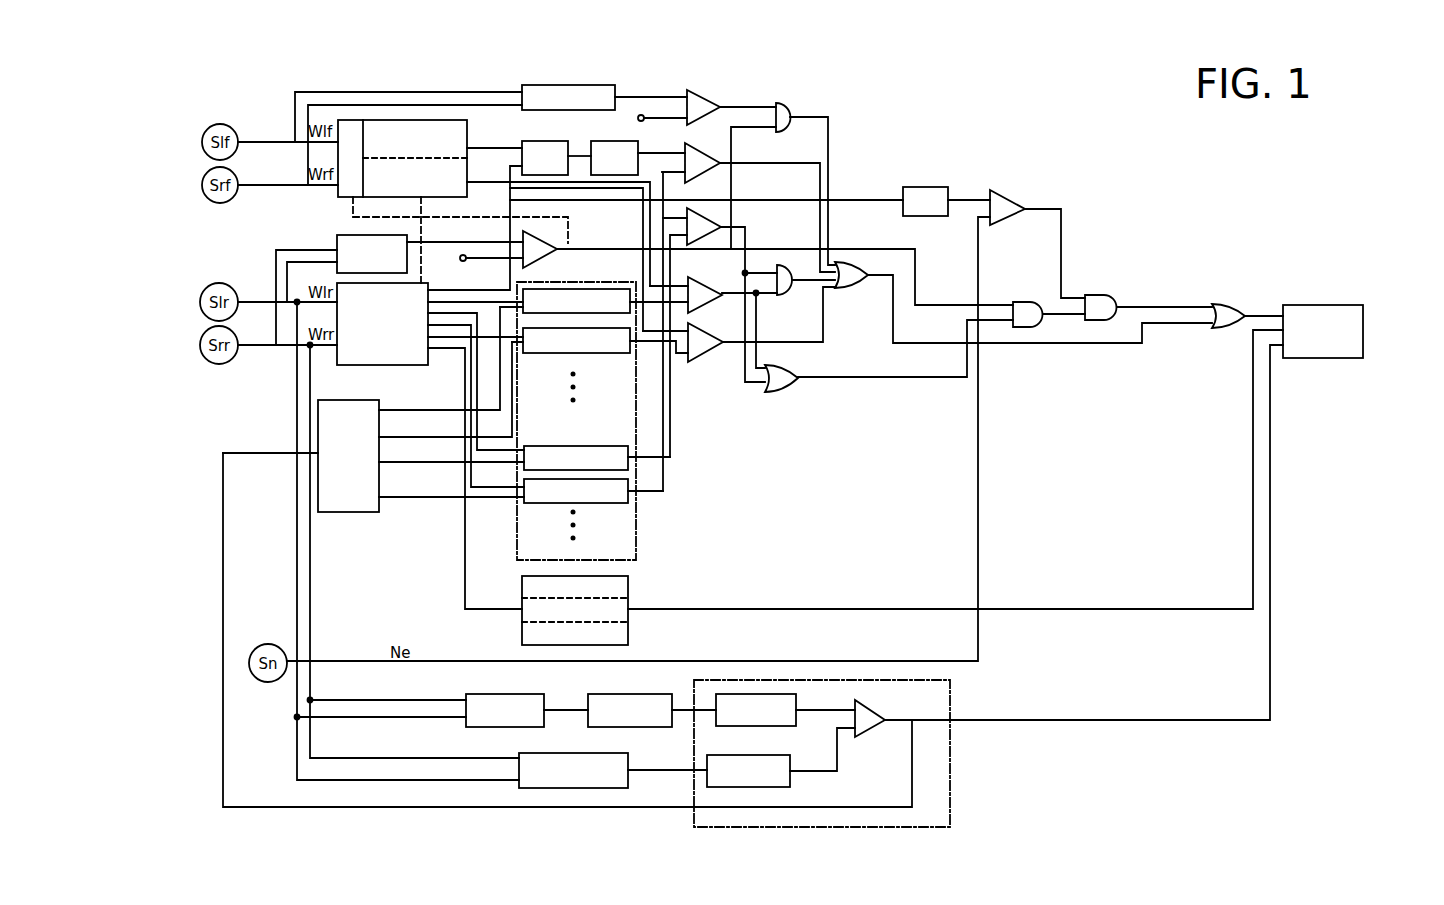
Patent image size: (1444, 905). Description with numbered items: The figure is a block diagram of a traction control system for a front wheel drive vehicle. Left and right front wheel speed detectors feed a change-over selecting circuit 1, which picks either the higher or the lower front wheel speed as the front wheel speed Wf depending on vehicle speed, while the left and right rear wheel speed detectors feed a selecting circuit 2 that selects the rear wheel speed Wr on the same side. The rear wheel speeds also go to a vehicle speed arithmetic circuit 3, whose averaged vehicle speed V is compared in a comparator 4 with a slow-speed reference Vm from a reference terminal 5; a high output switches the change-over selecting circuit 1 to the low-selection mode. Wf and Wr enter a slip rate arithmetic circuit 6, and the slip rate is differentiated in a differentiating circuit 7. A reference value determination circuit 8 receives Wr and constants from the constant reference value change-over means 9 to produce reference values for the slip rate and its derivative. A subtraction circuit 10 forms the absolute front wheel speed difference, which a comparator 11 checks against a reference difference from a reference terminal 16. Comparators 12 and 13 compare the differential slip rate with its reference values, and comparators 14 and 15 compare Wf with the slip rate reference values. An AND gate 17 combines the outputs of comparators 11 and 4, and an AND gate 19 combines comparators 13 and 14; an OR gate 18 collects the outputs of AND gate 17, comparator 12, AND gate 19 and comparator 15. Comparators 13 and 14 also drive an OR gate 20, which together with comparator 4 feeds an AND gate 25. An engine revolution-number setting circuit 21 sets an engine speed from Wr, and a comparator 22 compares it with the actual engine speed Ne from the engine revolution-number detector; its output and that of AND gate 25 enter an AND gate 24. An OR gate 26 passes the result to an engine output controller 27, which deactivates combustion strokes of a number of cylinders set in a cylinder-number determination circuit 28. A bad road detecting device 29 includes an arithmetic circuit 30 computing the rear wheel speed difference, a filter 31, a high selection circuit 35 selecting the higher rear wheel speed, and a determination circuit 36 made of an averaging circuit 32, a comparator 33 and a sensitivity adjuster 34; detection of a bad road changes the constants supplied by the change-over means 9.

The change-over selecting circuit 1 is at (471, 115).
The selecting circuit 2 is at (287, 366).
The vehicle speed arithmetic circuit 3 is at (250, 262).
The comparator 4 is at (768, 216).
The reference terminal 5 is at (460, 261).
The slip rate arithmetic circuit 6 is at (420, 64).
The differentiating circuit 7 is at (612, 147).
The reference value determination circuit 8 is at (637, 400).
The constant reference value change-over means 9 is at (280, 430).
The subtraction circuit 10 is at (532, 50).
The comparator 11 is at (703, 101).
The comparator 12 is at (697, 152).
The comparator 13 is at (702, 207).
The comparator 14 is at (699, 294).
The comparator 15 is at (702, 340).
The reference terminal 16 is at (640, 115).
The AND gate 17 is at (784, 105).
The OR gate 18 is at (860, 270).
The AND gate 19 is at (791, 297).
The OR gate 20 is at (792, 368).
The engine revolution-number setting circuit 21 is at (934, 190).
The comparator 22 is at (1008, 196).
The AND gate 24 is at (1103, 296).
The AND gate 25 is at (1046, 302).
The OR gate 26 is at (1238, 295).
The engine output controller 27 is at (1292, 311).
The cylinder-number determination circuit 28 is at (630, 592).
The bad road detecting device 29 is at (648, 782).
The arithmetic circuit 30 is at (480, 676).
The filter 31 is at (643, 677).
The averaging circuit 32 is at (747, 727).
The comparator 33 is at (753, 576).
The sensitivity adjuster 34 is at (784, 761).
The high selection circuit 35 is at (628, 762).
The determination circuit 36 is at (790, 827).